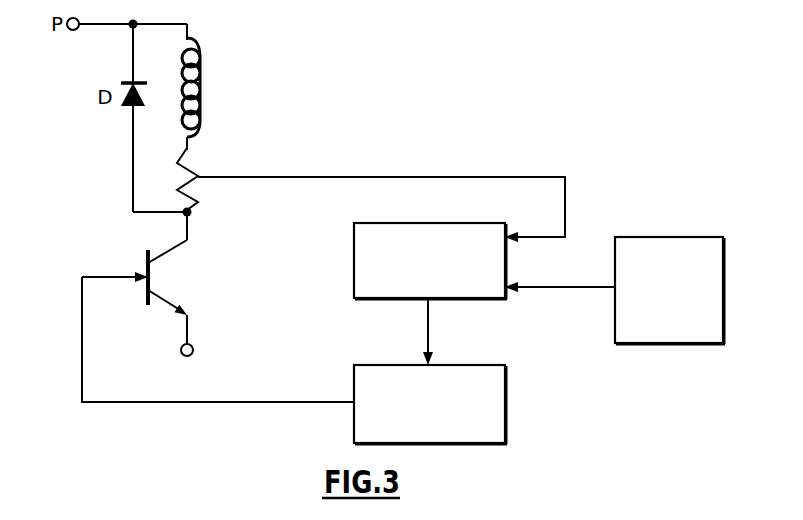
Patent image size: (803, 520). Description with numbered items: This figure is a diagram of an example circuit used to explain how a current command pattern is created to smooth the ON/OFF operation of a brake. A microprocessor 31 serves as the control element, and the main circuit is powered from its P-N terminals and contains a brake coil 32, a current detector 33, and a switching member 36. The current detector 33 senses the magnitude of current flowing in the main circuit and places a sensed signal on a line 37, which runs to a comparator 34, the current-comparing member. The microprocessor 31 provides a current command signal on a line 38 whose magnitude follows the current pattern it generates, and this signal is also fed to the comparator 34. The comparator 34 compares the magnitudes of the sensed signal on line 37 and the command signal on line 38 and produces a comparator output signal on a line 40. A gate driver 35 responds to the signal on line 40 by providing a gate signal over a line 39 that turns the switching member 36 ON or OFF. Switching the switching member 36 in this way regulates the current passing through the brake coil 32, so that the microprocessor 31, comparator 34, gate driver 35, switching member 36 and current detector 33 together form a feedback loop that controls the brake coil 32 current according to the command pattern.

The microprocessor 31 is at (668, 237).
The brake coil 32 is at (199, 62).
The current detector 33 is at (196, 162).
The comparator 34 is at (354, 238).
The gate driver 35 is at (425, 443).
The switching member 36 is at (168, 287).
The line 37 is at (296, 178).
The line 38 is at (553, 288).
The drive line 39 is at (225, 402).
The line 40 is at (428, 333).